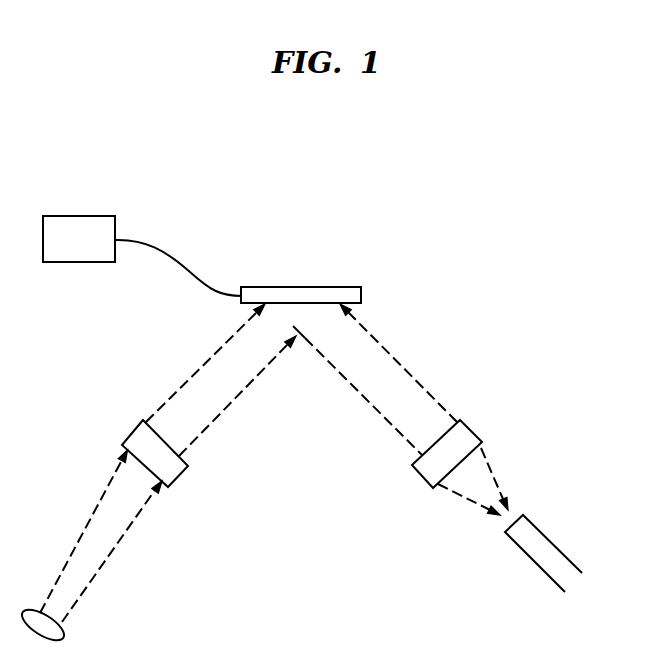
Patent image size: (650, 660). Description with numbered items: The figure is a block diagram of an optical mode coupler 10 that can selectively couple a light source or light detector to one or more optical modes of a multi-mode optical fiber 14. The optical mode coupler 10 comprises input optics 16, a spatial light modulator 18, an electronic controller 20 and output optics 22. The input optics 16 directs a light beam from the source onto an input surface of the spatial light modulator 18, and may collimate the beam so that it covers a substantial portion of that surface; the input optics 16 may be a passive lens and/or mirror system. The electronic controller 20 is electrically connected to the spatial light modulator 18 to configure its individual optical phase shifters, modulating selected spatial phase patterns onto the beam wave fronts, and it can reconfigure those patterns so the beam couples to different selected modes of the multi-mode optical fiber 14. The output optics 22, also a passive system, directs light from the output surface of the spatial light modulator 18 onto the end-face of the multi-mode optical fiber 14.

The optical mode coupler 10 is at (541, 245).
The multi-mode optical fiber 14 is at (555, 543).
The input optics 16 is at (182, 475).
The spatial light modulator 18 is at (315, 288).
The electronic controller 20 is at (90, 250).
The output optics 22 is at (473, 432).